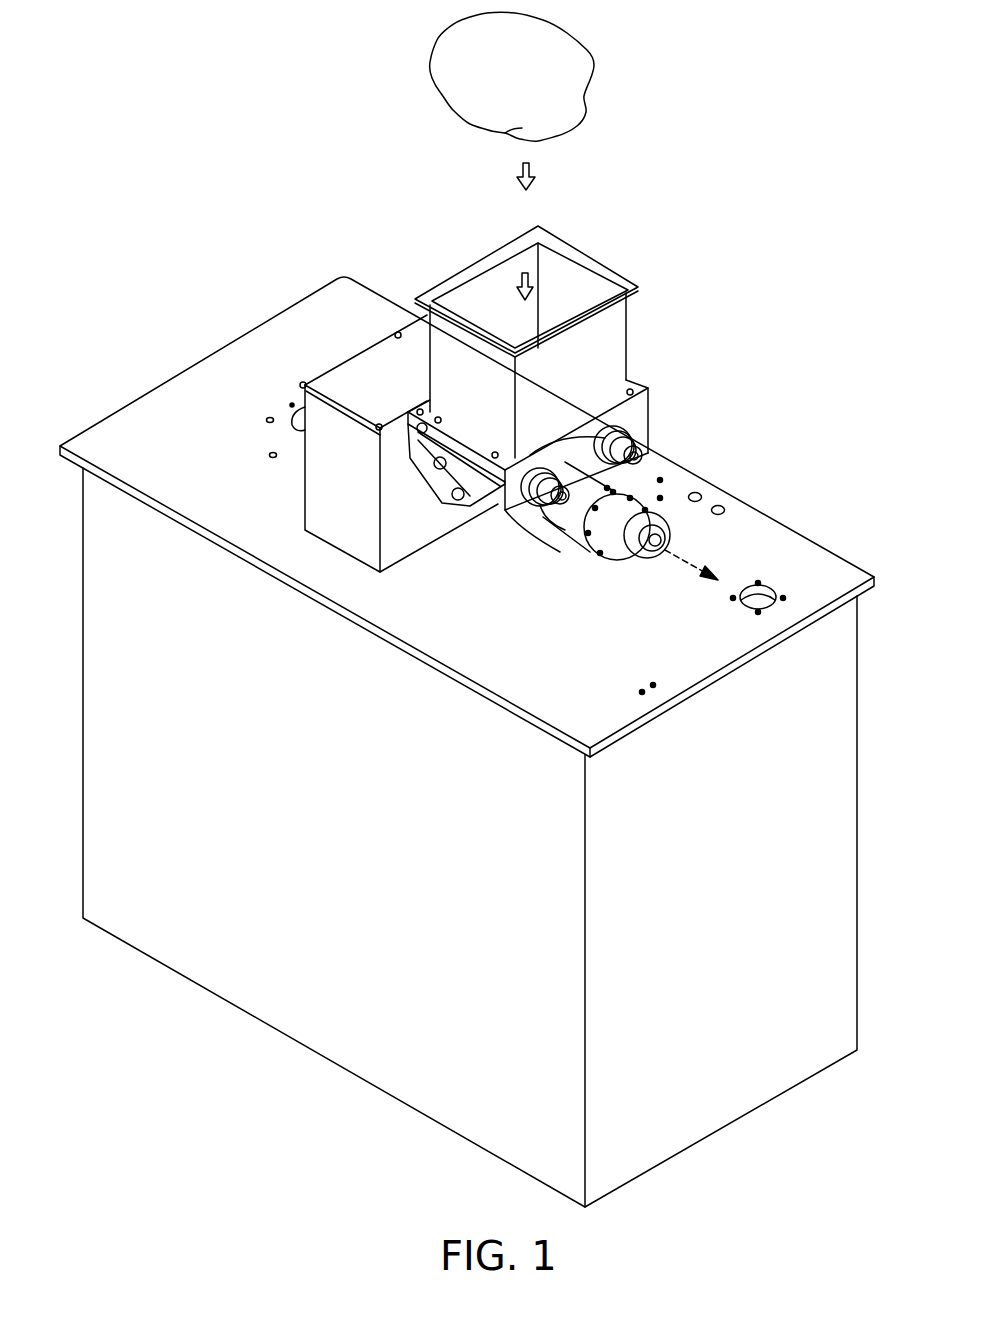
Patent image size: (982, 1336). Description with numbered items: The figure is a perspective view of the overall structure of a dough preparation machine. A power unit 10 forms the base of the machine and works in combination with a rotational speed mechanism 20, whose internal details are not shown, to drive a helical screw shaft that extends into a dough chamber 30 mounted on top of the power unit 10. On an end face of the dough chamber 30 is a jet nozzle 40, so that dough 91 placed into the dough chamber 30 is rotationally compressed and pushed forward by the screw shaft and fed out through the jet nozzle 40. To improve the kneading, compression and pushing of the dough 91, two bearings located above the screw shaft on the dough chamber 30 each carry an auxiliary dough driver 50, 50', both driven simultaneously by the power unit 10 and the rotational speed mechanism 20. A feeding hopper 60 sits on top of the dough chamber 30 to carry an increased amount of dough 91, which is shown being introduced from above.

The power unit 10 is at (170, 362).
The rotational speed mechanism 20 is at (370, 362).
The dough chamber 30 is at (650, 412).
The jet nozzle 40 is at (600, 555).
The auxiliary dough driver 50 is at (666, 455).
The auxiliary dough driver 50' is at (508, 516).
The feeding hopper 60 is at (617, 338).
The dough 91 is at (588, 63).